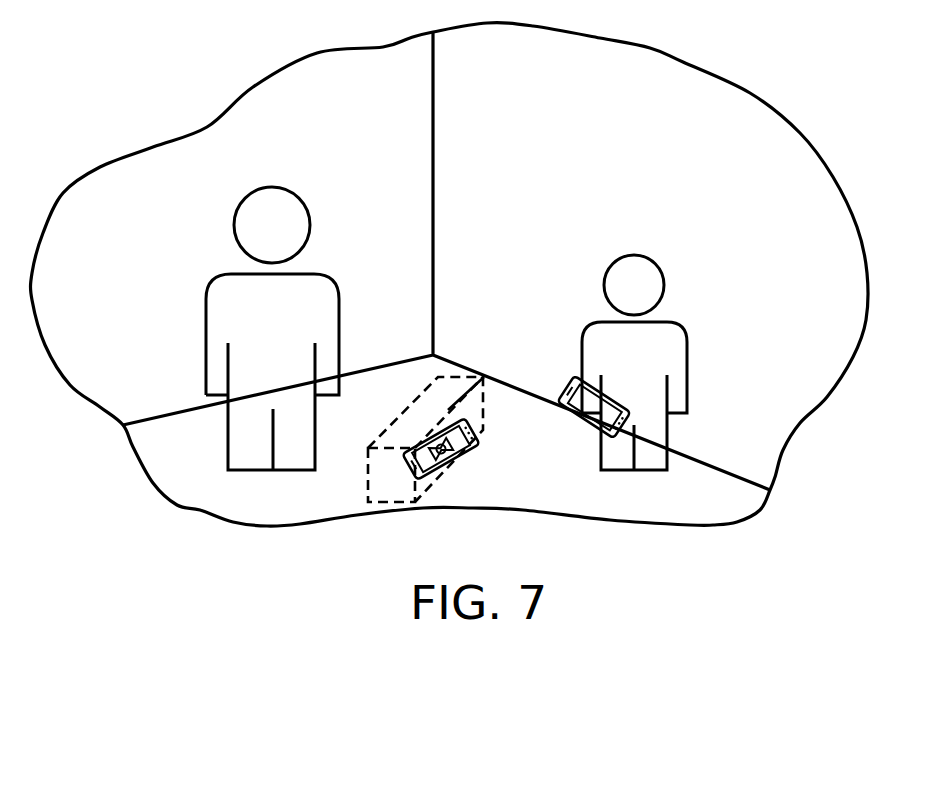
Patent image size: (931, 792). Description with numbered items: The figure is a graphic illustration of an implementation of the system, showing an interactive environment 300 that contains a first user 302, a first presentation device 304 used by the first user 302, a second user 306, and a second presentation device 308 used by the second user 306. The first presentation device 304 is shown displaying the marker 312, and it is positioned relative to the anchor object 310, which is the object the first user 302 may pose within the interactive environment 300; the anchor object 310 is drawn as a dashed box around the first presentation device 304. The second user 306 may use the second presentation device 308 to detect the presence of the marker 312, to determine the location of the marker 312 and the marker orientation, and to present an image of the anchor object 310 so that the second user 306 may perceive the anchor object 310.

The interactive environment 300 is at (370, 136).
The first user 302 is at (207, 335).
The first presentation device 304 is at (450, 412).
The second user 306 is at (687, 370).
The second presentation device 308 is at (560, 400).
The anchor object 310 is at (405, 507).
The marker 312 is at (458, 424).